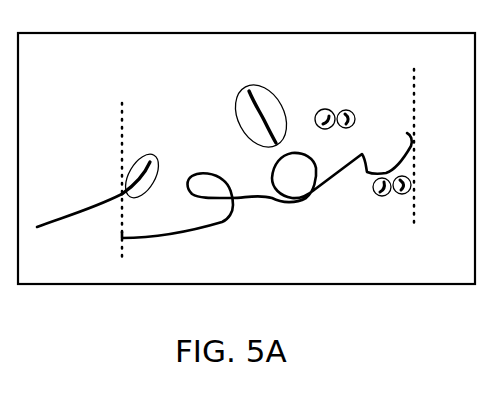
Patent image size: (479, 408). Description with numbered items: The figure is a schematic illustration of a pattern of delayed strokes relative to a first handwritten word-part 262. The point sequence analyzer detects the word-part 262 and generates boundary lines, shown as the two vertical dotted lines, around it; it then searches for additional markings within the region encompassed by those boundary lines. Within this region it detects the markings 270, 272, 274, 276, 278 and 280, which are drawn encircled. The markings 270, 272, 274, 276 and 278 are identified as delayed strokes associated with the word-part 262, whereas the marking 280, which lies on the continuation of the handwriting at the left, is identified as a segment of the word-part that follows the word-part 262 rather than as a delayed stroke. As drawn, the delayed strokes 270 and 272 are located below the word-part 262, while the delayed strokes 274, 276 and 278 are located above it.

The word-part 262 is at (212, 227).
The marking 270 is at (398, 197).
The marking 272 is at (380, 197).
The marking 274 is at (352, 108).
The marking 276 is at (318, 106).
The marking 278 is at (250, 83).
The marking 280 is at (158, 157).